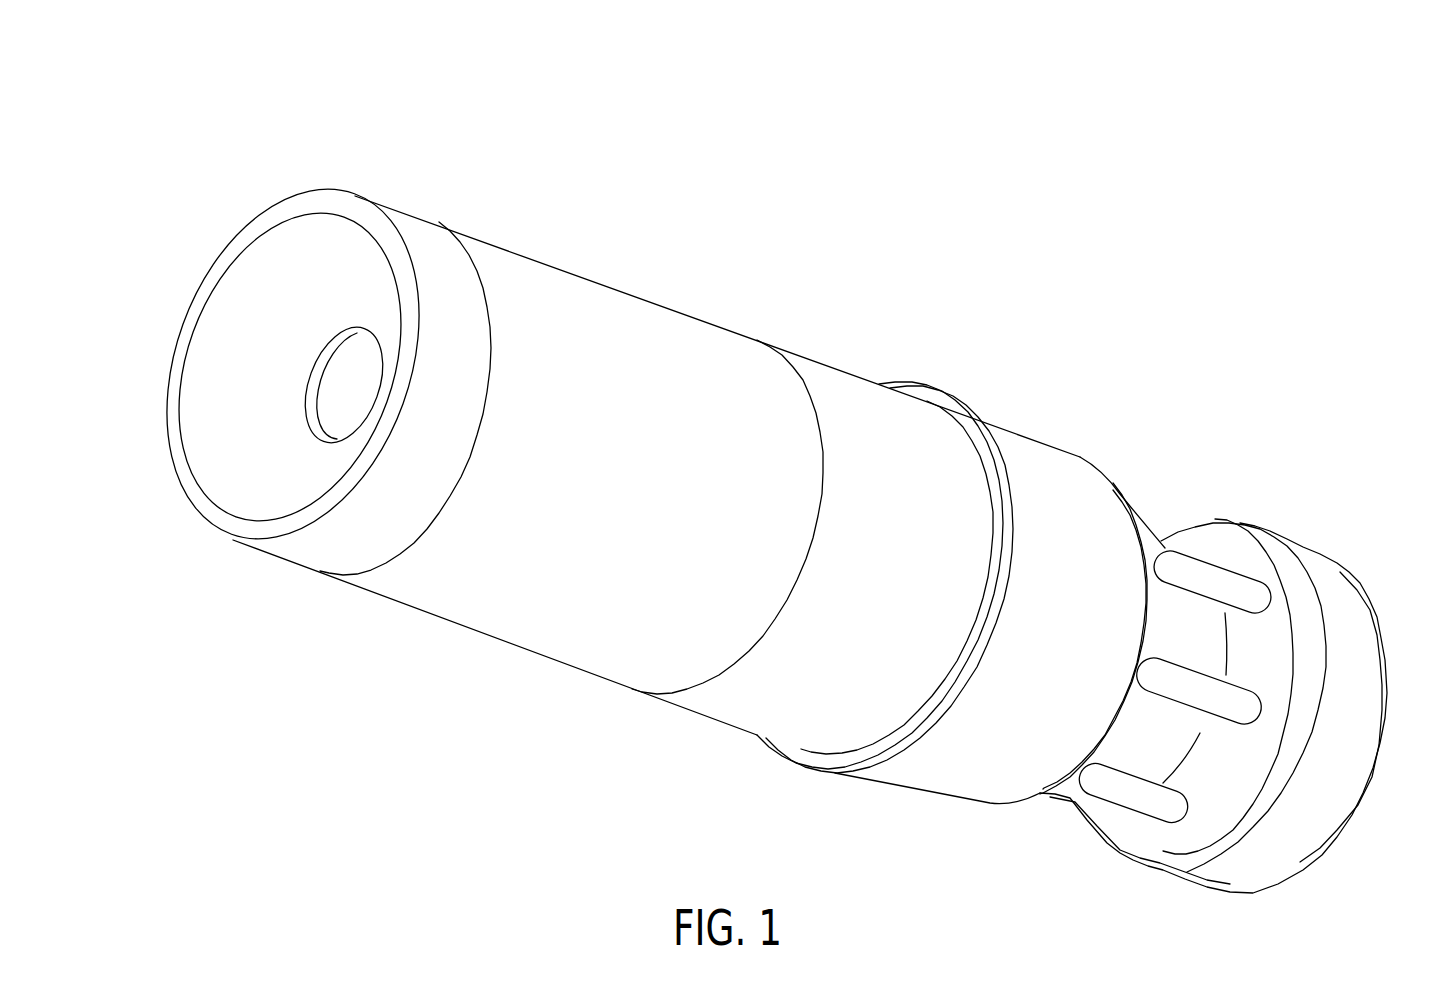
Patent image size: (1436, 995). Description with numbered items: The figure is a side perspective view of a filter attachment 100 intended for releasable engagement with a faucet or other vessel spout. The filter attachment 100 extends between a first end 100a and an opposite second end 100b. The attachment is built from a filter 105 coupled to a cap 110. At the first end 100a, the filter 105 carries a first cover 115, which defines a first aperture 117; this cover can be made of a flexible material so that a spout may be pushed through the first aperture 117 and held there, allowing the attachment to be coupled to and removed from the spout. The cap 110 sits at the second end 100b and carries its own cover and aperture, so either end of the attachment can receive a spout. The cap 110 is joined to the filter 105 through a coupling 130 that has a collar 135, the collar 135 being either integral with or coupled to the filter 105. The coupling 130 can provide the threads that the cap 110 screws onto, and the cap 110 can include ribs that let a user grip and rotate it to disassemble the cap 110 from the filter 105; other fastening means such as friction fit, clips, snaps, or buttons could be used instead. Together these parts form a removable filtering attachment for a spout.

The filter attachment 100 is at (160, 138).
The first end 100a is at (291, 244).
The second end 100b is at (1332, 787).
The filter 105 is at (640, 672).
The cap 110 is at (1235, 580).
The first cover 115 is at (204, 333).
The first aperture 117 is at (327, 405).
The coupling 130 is at (928, 785).
The collar 135 is at (969, 422).